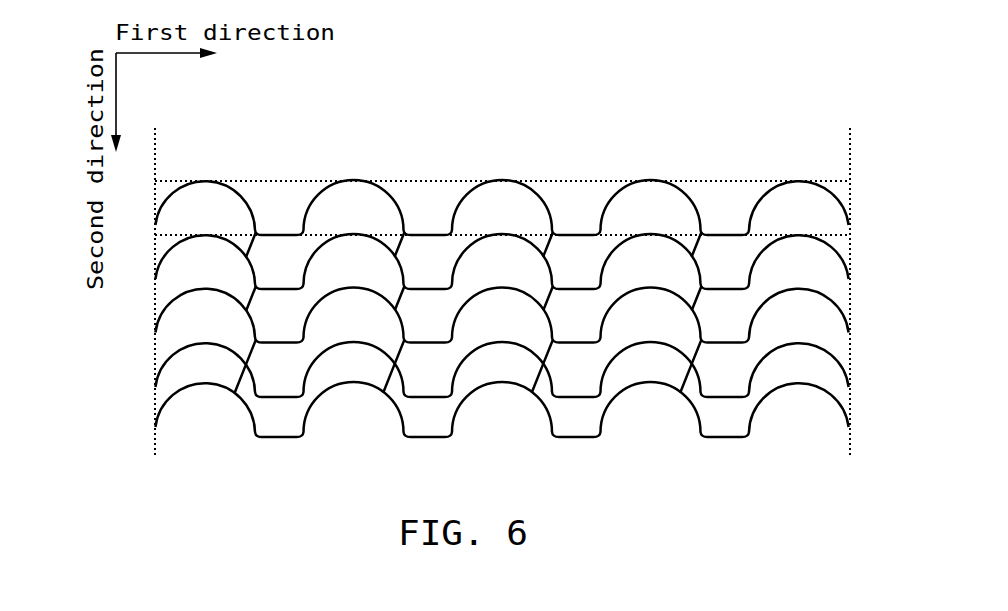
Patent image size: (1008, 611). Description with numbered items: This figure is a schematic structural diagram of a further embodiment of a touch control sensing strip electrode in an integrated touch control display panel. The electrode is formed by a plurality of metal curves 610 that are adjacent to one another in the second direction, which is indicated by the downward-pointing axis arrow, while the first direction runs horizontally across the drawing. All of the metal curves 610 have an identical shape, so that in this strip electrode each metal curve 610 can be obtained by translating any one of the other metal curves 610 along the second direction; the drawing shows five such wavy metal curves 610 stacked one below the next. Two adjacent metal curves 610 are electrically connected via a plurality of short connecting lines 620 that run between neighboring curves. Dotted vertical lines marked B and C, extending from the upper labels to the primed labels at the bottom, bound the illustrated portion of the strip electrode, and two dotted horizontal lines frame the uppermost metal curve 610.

The metal curve 610 is at (575, 181).
The connecting line 620 is at (251, 230).
The section line B-B' B is at (150, 297).
The section line C-C' C is at (845, 297).